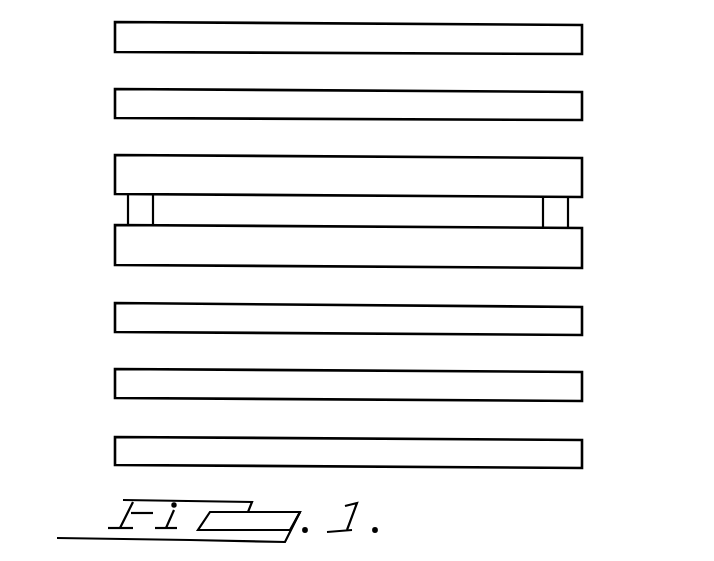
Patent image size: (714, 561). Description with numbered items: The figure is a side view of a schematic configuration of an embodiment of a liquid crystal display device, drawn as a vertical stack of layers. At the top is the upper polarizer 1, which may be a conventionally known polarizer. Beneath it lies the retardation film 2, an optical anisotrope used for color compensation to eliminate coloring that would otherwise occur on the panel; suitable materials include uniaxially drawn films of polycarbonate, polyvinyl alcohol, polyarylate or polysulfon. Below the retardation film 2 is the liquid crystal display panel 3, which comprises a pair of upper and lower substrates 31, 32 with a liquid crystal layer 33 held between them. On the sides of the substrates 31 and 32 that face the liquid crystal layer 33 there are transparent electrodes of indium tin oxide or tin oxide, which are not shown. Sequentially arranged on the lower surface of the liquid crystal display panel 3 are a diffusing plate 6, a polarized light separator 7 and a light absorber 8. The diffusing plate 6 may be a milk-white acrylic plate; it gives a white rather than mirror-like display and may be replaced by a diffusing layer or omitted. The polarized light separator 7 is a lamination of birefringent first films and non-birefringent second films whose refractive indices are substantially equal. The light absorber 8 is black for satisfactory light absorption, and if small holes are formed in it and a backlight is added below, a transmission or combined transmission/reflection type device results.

The upper polarizer 1 is at (568, 44).
The retardation film 2 is at (568, 109).
The liquid crystal display panel 3 is at (343, 215).
The upper substrate 31 is at (130, 177).
The lower substrate 32 is at (130, 243).
The liquid crystal layer 33 is at (175, 210).
The diffusing plate 6 is at (568, 325).
The polarized light separator 7 is at (568, 394).
The light absorber 8 is at (568, 462).